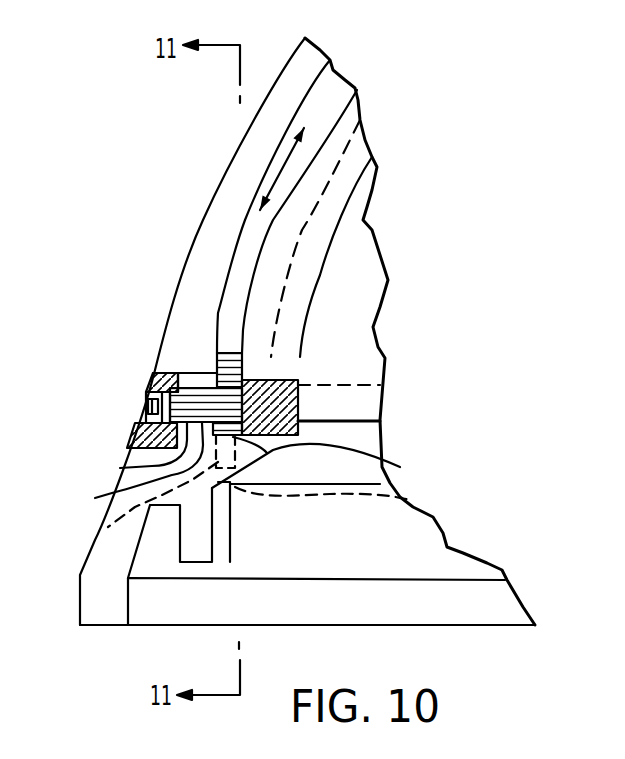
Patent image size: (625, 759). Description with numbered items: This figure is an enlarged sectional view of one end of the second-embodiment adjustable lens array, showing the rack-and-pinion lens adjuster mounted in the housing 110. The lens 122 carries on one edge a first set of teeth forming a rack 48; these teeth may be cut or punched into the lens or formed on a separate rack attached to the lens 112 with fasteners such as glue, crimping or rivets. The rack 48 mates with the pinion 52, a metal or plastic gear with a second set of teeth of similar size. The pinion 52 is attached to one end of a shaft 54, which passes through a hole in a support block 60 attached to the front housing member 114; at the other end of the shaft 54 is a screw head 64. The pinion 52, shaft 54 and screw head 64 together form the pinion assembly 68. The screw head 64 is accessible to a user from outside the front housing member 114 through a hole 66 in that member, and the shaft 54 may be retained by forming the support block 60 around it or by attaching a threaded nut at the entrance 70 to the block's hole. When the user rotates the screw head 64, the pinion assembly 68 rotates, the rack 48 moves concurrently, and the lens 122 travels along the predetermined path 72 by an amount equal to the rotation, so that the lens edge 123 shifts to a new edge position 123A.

The housing 110 is at (419, 214).
The lens 112 is at (495, 627).
The front housing member 114 is at (235, 153).
The lens 122 is at (247, 213).
The lens edge 123 is at (400, 467).
The new edge position 123A is at (413, 500).
The rack 48 is at (231, 360).
The pinion assembly 68 is at (191, 365).
The support block 60 is at (178, 376).
The screw head 64 is at (148, 390).
The hole 66 is at (158, 404).
The entrance 70 is at (147, 409).
The shaft 54 is at (120, 468).
The pinion 52 is at (95, 498).
The predetermined path 72 is at (105, 528).